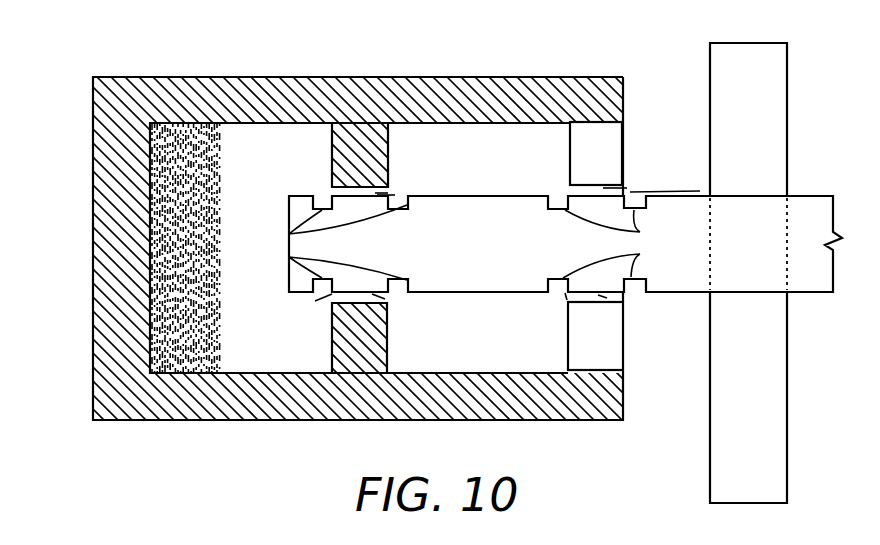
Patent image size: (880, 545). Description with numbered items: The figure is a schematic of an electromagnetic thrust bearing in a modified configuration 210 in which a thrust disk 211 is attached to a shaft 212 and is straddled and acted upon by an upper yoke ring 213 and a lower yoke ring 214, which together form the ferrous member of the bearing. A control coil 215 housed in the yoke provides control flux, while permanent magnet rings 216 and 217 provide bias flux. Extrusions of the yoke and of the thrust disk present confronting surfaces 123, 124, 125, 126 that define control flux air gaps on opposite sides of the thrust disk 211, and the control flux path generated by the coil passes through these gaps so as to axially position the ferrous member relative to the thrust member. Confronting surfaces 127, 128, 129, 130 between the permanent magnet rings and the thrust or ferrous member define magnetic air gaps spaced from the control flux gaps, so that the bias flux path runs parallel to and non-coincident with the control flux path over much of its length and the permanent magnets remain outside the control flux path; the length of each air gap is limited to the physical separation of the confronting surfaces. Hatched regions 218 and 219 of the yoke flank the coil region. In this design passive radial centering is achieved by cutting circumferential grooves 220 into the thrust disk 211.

The configuration 210 is at (118, 44).
The thrust disk 211 is at (793, 195).
The shaft 212 is at (787, 368).
The upper yoke ring 213 is at (242, 421).
The lower yoke ring 214 is at (240, 76).
The control coil 215 is at (223, 187).
The permanent magnet ring 216 is at (625, 153).
The permanent magnet ring 217 is at (625, 338).
The upper pole piece 218 is at (332, 157).
The lower pole piece 219 is at (330, 342).
The grooves 220 is at (289, 234).
The confronting surface 123 is at (375, 193).
The confronting surface 124 is at (377, 195).
The confronting surface 125 is at (332, 294).
The confronting surface 126 is at (372, 294).
The confronting surface 127 is at (603, 188).
The confronting surface 128 is at (630, 192).
The confronting surface 129 is at (598, 295).
The confronting surface 130 is at (565, 293).